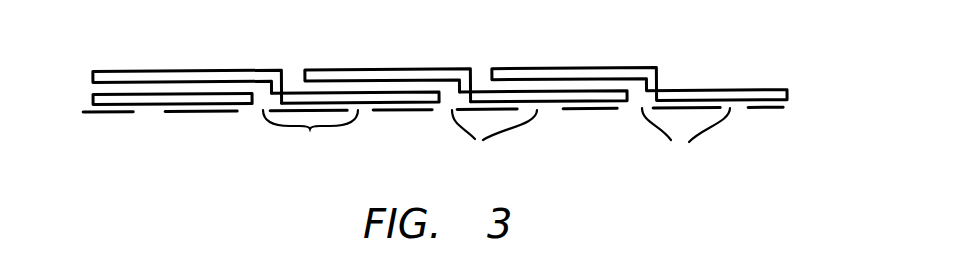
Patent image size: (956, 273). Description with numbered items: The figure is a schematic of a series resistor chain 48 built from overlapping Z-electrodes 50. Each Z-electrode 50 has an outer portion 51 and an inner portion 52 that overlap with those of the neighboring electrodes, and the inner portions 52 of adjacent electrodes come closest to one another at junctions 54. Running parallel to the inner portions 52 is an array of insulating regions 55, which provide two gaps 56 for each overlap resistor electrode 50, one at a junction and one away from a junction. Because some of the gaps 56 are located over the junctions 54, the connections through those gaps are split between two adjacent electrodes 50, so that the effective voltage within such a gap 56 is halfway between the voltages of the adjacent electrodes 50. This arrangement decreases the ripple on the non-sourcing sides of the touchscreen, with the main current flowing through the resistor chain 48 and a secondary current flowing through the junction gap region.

The resistor chain 48 is at (131, 66).
The Z-electrode 50 is at (438, 65).
The outer portion 51 is at (550, 67).
The inner portion 52 is at (602, 96).
The junction 54 is at (445, 100).
The insulating region 55 is at (405, 113).
The gap 56 is at (149, 114).